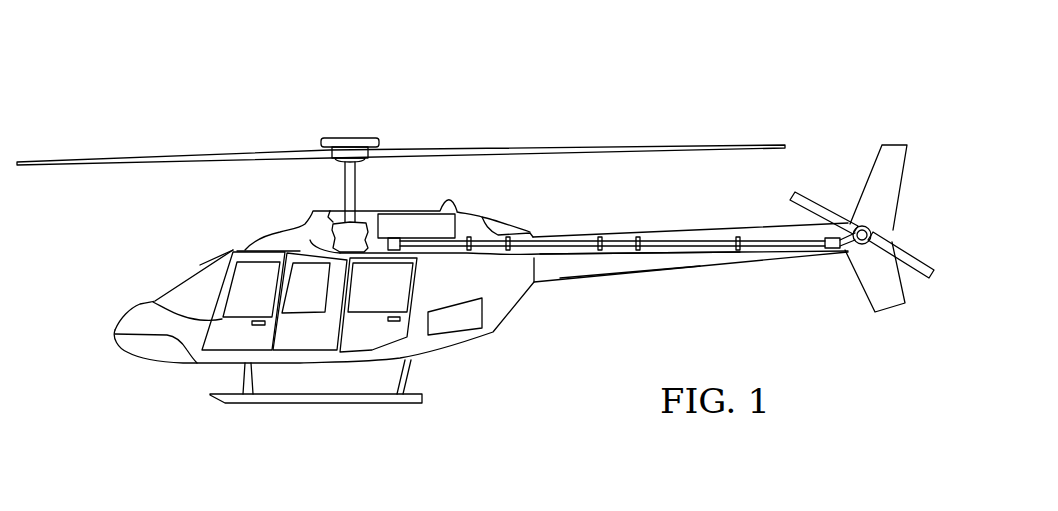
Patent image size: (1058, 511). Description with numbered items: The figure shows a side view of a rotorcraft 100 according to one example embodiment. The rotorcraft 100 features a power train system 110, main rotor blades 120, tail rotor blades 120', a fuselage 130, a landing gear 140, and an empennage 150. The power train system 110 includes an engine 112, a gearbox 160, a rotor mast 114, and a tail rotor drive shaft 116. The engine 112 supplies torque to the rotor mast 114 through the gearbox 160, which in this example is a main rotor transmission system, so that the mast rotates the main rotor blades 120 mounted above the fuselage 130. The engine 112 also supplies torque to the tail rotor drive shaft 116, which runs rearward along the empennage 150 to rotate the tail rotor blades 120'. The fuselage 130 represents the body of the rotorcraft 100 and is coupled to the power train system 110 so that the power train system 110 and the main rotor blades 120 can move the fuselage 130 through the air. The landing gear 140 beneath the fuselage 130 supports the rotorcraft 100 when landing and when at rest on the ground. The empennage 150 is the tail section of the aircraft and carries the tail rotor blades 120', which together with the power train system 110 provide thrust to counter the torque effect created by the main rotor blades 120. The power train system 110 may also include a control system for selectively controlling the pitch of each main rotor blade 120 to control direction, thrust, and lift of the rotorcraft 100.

The rotorcraft 100 is at (197, 78).
The power train system 110 is at (372, 126).
The engine 112 is at (457, 227).
The rotor mast 114 is at (345, 200).
The tail rotor drive shaft 116 is at (687, 242).
The main rotor blades 120 is at (401, 127).
The tail rotor blades 120' is at (862, 228).
The fuselage 130 is at (460, 346).
The landing gear 140 is at (237, 405).
The empennage 150 is at (622, 277).
The gearbox 160 is at (330, 238).